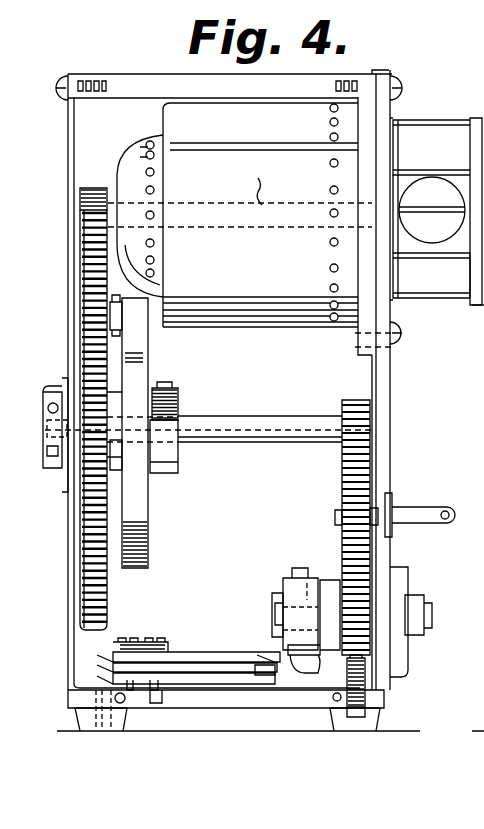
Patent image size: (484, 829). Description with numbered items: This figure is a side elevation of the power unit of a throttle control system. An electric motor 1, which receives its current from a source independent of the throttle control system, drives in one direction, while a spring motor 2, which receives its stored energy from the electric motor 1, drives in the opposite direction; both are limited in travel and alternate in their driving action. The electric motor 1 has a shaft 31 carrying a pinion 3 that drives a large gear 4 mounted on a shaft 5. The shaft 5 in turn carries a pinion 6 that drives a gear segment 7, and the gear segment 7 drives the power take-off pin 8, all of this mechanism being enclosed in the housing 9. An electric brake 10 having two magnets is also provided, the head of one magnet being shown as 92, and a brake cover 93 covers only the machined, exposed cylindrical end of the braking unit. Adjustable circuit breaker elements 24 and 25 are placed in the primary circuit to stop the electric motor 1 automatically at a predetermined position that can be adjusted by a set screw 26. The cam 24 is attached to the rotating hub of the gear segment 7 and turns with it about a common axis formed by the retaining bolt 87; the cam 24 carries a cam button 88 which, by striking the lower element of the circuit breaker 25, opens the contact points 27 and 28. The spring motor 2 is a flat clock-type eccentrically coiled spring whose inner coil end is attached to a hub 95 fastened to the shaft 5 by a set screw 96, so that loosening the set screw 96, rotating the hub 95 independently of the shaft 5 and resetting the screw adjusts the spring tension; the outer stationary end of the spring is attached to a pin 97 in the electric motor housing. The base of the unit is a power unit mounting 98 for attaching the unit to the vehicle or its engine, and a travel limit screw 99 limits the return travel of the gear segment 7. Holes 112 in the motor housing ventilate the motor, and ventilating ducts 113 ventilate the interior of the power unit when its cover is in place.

The electric motor 1 is at (251, 226).
The spring motor 2 is at (138, 371).
The pinion 3 is at (80, 194).
The large gear 4 is at (92, 290).
The shaft 5 is at (260, 426).
The pinion 6 is at (349, 405).
The gear segment 7 is at (358, 552).
The power take-off pin 8 is at (423, 509).
The housing 9 is at (68, 525).
The electric brake 10 is at (431, 275).
The cam 24 is at (280, 654).
The circuit breaker 25 is at (221, 660).
The set screw 26 is at (300, 548).
The contact point 27 is at (275, 660).
The contact point 28 is at (268, 683).
The shaft 31 is at (243, 183).
The retaining bolt 87 is at (277, 593).
The cam button 88 is at (322, 670).
The magnet head 92 is at (429, 214).
The brake cover 93 is at (470, 118).
The hub 95 is at (178, 463).
The set screw 96 is at (178, 394).
The pin 97 is at (150, 308).
The power unit mounting 98 is at (276, 705).
The travel limit screw 99 is at (376, 712).
The holes 112 is at (148, 150).
The ventilating ducts 113 is at (483, 312).